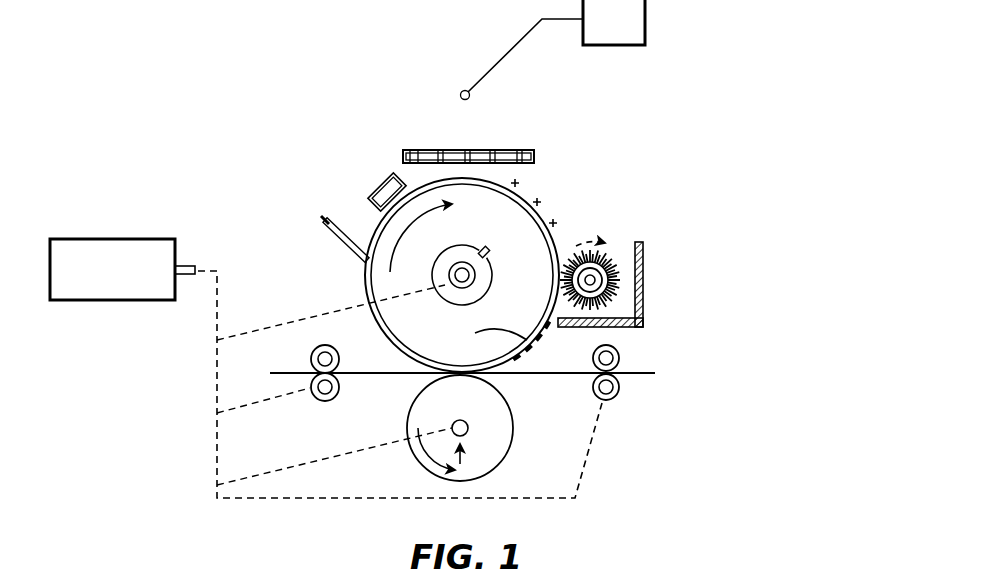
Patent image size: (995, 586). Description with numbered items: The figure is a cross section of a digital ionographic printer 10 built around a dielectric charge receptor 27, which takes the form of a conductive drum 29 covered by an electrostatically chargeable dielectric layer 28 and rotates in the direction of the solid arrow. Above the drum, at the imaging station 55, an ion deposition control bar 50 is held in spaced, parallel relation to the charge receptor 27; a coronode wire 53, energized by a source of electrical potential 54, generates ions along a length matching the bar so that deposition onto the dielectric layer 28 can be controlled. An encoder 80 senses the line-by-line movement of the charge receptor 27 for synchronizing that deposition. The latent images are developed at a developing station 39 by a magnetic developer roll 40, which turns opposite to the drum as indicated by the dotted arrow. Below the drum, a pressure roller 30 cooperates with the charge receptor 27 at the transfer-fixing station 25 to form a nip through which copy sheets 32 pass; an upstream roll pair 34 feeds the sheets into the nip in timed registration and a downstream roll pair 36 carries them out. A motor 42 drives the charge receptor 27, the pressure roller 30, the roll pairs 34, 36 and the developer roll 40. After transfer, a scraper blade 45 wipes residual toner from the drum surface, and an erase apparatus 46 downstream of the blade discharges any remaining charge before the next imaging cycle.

The printer 10 is at (373, 128).
The transfer-fixing station 25 is at (415, 385).
The dielectric charge receptor 27 is at (353, 300).
The dielectric layer 28 is at (365, 295).
The conductive drum 29 is at (482, 333).
The pressure roller 30 is at (420, 467).
The copy sheets 32 is at (530, 377).
The roll pair 34 is at (613, 392).
The roll pair 36 is at (310, 350).
The developing station 39 is at (567, 238).
The magnetic developer roll 40 is at (623, 272).
The motor 42 is at (131, 243).
The scraper blade 45 is at (330, 222).
The erase apparatus 46 is at (380, 183).
The ion deposition control bar 50 is at (485, 130).
The coronode wire 53 is at (460, 92).
The source of electrical potential 54 is at (645, 20).
The imaging station 55 is at (545, 172).
The encoder 80 is at (467, 243).